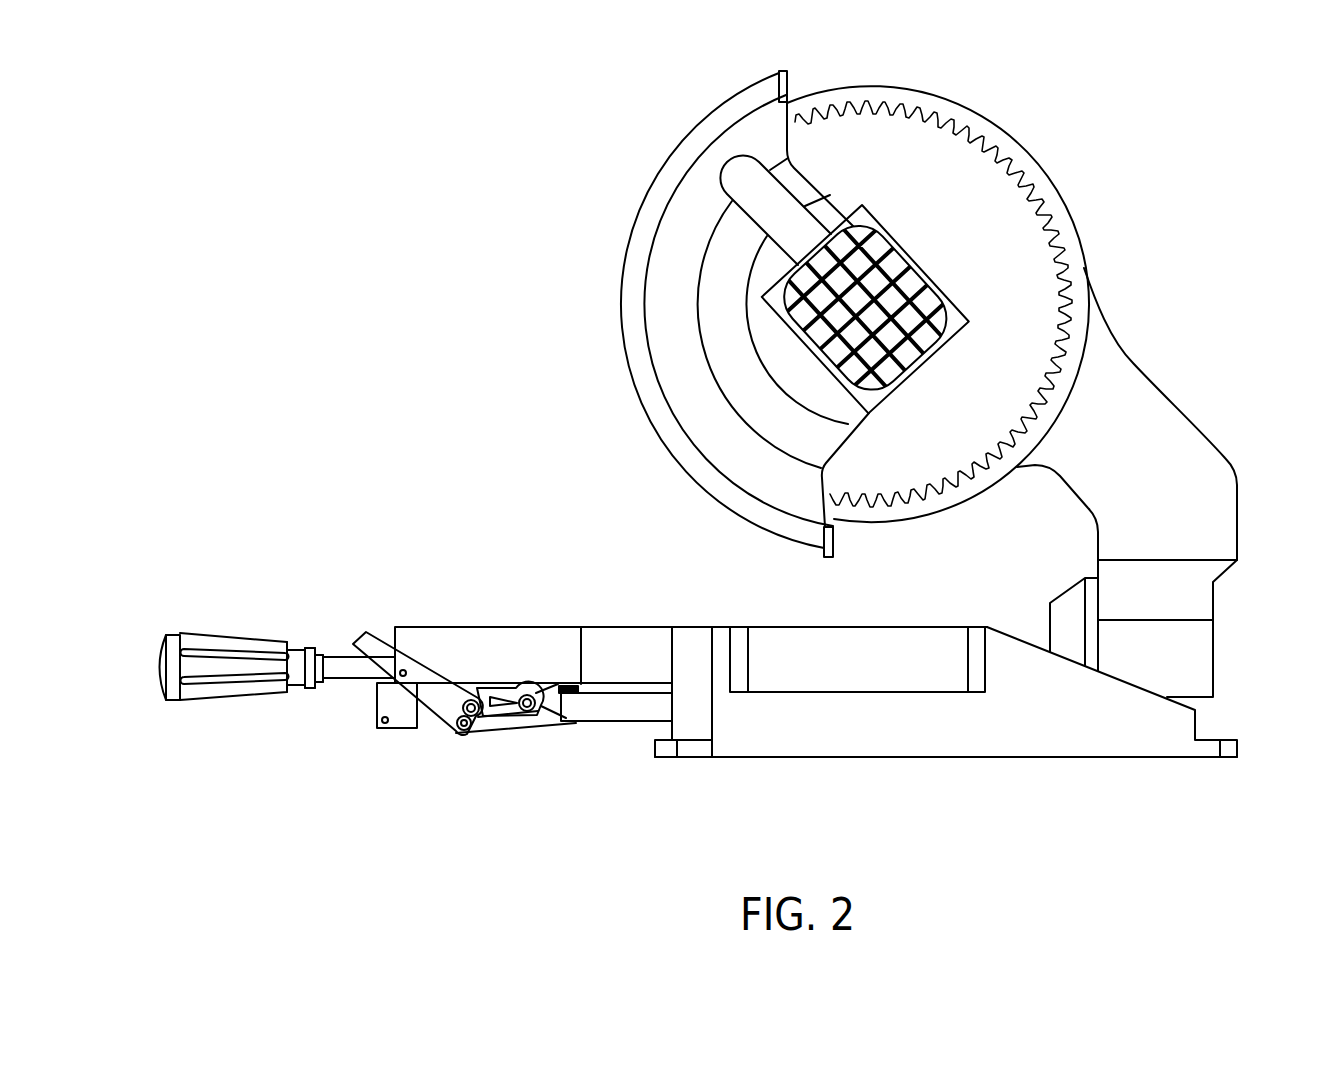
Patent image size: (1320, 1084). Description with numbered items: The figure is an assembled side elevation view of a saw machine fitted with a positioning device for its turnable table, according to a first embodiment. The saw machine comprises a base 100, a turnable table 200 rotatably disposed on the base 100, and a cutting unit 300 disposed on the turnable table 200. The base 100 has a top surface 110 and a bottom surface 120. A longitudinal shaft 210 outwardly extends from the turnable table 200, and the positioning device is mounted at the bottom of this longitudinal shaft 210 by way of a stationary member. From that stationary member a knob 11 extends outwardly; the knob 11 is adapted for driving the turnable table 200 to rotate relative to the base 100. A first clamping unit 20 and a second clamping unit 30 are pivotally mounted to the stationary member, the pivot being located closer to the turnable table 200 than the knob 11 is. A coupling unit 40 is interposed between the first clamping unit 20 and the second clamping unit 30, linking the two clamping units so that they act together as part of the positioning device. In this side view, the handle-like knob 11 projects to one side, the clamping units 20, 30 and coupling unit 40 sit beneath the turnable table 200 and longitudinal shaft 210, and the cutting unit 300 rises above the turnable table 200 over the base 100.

The knob 11 is at (240, 672).
The first clamping unit 20 is at (517, 670).
The second clamping unit 30 is at (490, 738).
The coupling unit 40 is at (430, 732).
The base 100 is at (1101, 735).
The top surface 110 is at (582, 627).
The bottom surface 120 is at (583, 723).
The turnable table 200 is at (641, 618).
The longitudinal shaft 210 is at (421, 642).
The cutting unit 300 is at (1065, 188).